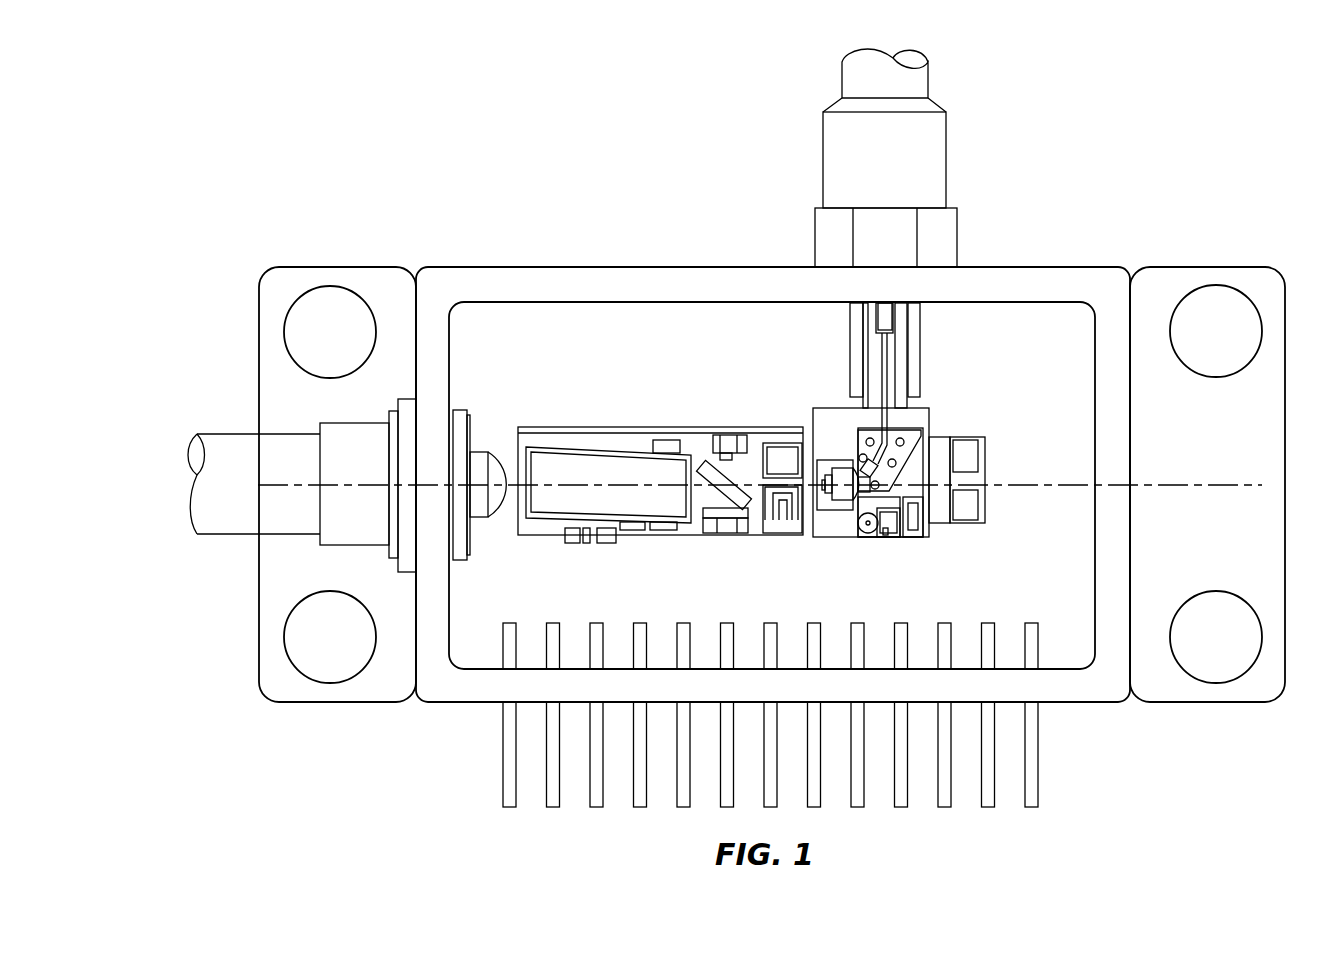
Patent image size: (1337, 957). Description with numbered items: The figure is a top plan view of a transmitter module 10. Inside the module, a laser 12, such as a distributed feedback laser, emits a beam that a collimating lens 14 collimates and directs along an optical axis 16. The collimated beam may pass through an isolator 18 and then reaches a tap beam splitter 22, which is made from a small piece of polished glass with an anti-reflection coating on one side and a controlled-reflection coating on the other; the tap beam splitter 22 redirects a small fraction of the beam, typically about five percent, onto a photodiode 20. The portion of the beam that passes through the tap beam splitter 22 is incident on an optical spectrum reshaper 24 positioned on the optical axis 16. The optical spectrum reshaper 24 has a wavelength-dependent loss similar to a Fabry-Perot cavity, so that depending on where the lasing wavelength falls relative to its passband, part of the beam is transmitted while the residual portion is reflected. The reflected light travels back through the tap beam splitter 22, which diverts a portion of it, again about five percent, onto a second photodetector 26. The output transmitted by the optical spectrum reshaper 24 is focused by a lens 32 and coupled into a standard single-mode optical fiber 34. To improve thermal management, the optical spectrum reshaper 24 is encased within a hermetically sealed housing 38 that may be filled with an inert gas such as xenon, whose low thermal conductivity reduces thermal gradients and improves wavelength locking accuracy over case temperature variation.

The transmitter module 10 is at (1022, 202).
The laser 12 is at (870, 483).
The collimating lens 14 is at (823, 480).
The optical axis 16 is at (1182, 479).
The isolator 18 is at (782, 513).
The photodiode 20 is at (725, 442).
The tap beam splitter 22 is at (715, 470).
The optical spectrum reshaper 24 is at (558, 465).
The second photodetector 26 is at (725, 527).
The lens 32 is at (495, 470).
The optical fiber 34 is at (240, 477).
The hermetically sealed housing 38 is at (1077, 285).